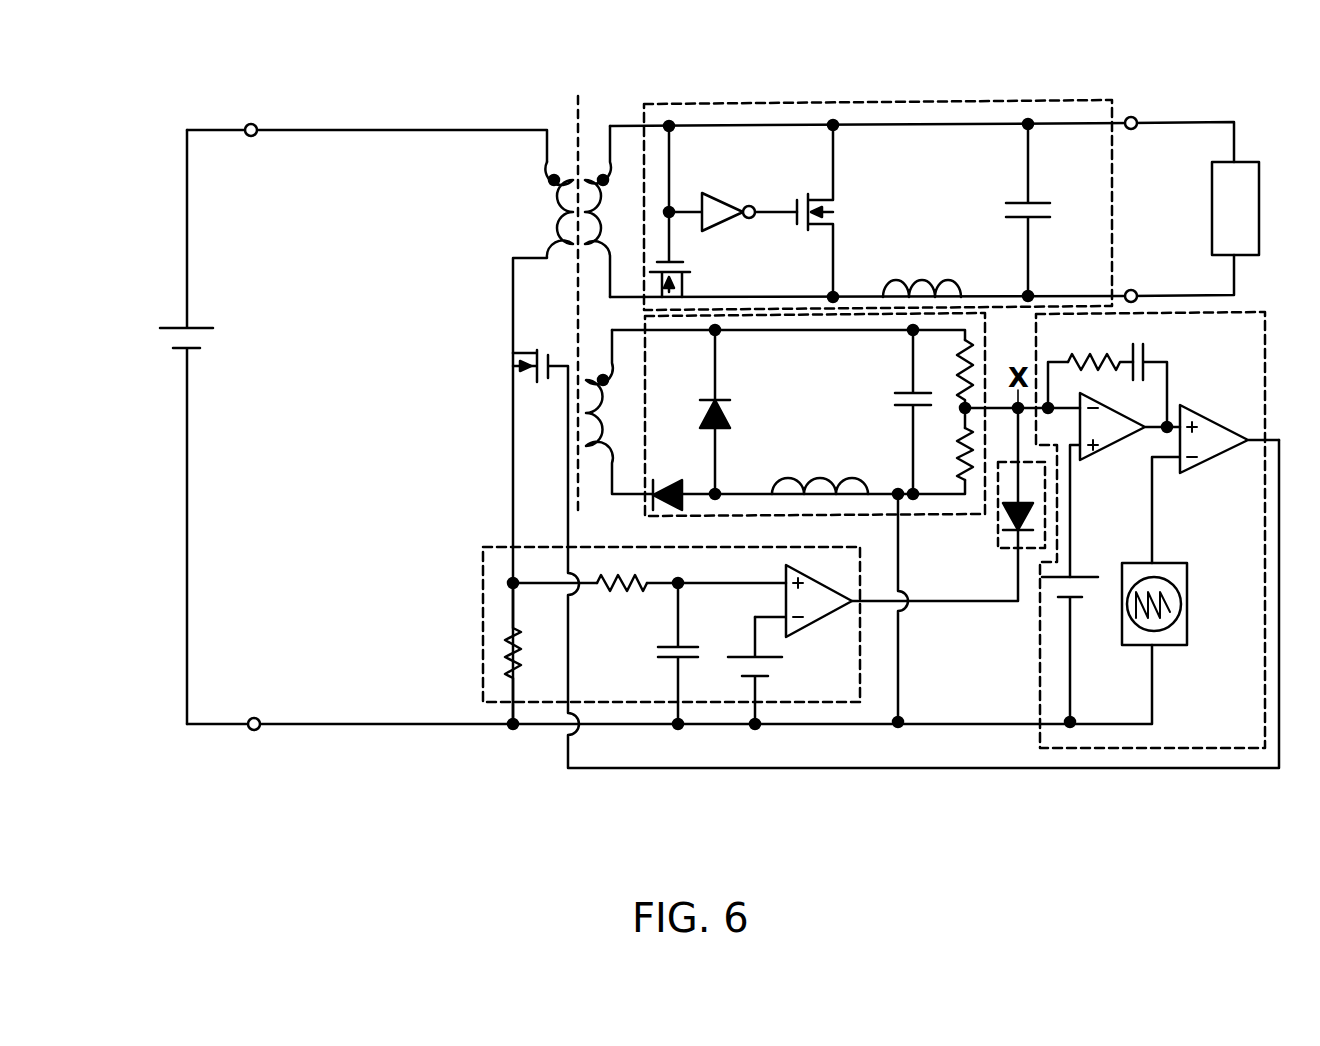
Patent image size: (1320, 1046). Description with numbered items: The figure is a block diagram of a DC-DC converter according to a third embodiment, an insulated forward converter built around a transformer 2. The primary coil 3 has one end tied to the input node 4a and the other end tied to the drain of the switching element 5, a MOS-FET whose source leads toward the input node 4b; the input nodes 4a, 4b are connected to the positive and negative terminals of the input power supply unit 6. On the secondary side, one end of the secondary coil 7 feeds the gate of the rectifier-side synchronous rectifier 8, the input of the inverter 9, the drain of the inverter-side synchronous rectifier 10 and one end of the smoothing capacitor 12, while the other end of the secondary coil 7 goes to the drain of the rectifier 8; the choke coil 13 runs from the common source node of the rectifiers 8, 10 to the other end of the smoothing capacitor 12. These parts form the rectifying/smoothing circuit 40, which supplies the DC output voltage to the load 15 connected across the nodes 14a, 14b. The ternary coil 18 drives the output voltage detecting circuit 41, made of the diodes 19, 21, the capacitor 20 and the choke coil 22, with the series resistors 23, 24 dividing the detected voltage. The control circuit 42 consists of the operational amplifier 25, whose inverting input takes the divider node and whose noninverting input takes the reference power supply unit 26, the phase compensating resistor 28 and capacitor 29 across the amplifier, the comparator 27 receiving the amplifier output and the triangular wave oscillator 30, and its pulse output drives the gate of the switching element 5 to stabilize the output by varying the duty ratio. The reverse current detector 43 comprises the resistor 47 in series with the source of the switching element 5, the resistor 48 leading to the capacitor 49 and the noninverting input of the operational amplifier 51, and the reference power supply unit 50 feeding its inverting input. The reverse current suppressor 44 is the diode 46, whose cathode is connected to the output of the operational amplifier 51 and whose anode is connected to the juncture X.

The transformer 2 is at (572, 288).
The primary coil 3 is at (568, 215).
The input node 4a is at (253, 124).
The input node 4b is at (254, 731).
The switching element 5 is at (508, 376).
The input power supply unit 6 is at (175, 327).
The secondary coil 7 is at (599, 158).
The rectifier-side synchronous rectifier 8 is at (685, 281).
The inverter 9 is at (716, 196).
The inverter-side synchronous rectifier 10 is at (838, 216).
The smoothing capacitor 12 is at (1002, 208).
The choke coil 13 is at (933, 278).
The node 14a is at (1132, 117).
The node 14b is at (1133, 290).
The load 15 is at (1260, 188).
The ternary coil 18 is at (604, 426).
The diode 19 is at (723, 415).
The capacitor 20 is at (893, 398).
The diode 21 is at (677, 487).
The choke coil 22 is at (792, 477).
The resistor 23 is at (977, 362).
The resistor 24 is at (958, 454).
The operational amplifier 25 is at (1105, 452).
The reference power supply unit 26 is at (1080, 575).
The comparator 27 is at (1213, 418).
The resistor 28 is at (1083, 355).
The capacitor 29 is at (1152, 347).
The triangular wave oscillator 30 is at (1188, 582).
The rectifying/smoothing circuit 40 is at (840, 103).
The output voltage detecting circuit 41 is at (943, 515).
The control circuit 42 is at (1267, 378).
The reverse current detector 43 is at (863, 655).
The reverse current suppressor 44 is at (997, 558).
The diode 46 is at (1016, 560).
The resistor 47 is at (525, 642).
The resistor 48 is at (623, 600).
The capacitor 49 is at (685, 647).
The reference power supply unit 50 is at (777, 672).
The operational amplifier 51 is at (820, 622).